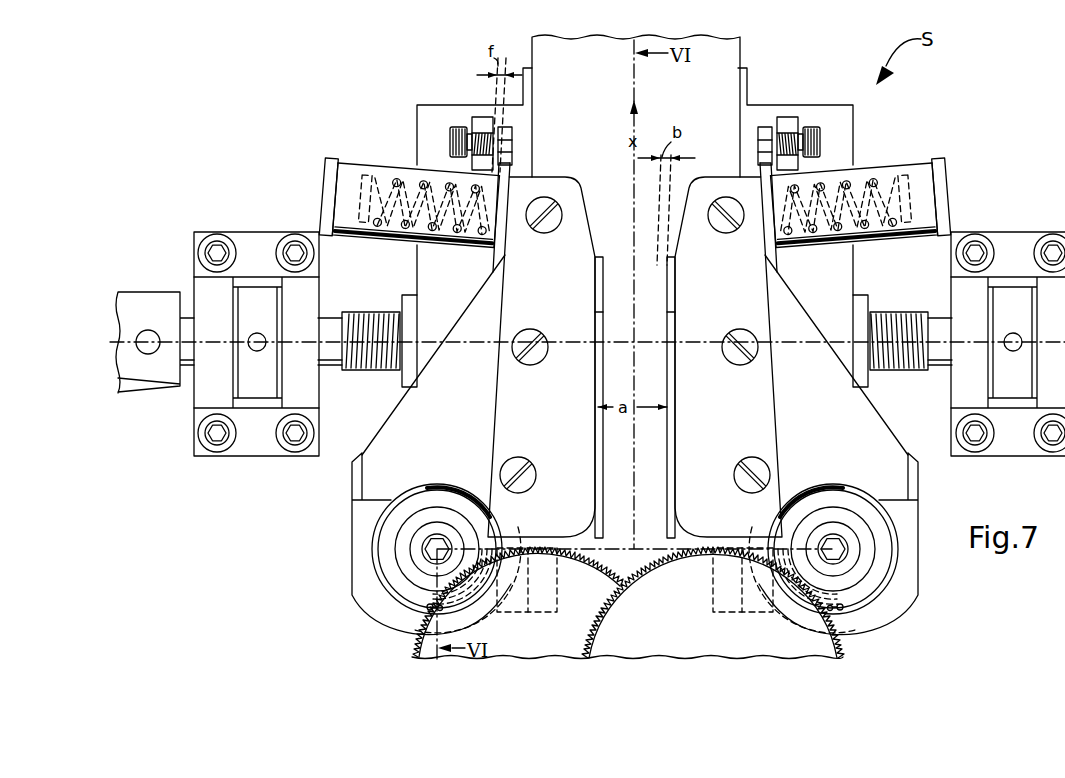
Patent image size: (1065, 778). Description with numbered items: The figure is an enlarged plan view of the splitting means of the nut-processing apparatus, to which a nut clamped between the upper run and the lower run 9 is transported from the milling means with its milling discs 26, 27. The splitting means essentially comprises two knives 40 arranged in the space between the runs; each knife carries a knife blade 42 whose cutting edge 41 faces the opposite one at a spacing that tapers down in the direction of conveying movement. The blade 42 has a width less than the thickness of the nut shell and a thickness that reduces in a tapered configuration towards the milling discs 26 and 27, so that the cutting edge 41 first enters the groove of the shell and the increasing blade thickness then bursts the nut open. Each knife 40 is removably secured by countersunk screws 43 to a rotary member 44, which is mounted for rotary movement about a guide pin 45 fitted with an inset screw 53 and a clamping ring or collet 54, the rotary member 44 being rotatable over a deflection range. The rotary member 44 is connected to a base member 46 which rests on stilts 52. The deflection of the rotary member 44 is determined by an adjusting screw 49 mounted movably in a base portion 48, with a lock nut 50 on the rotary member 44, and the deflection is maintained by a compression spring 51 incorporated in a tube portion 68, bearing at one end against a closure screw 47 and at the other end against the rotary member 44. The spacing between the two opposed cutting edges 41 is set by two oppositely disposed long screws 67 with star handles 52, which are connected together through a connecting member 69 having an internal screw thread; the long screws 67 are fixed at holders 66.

The lower run 9 is at (716, 45).
The milling disc 26 is at (842, 641).
The milling disc 27 is at (413, 642).
The knife 40 is at (522, 279).
The cutting edge 41 is at (604, 328).
The knife blade 42 is at (600, 278).
The countersunk screw 43 is at (555, 224).
The rotary member 44 is at (372, 428).
The guide pin 45 is at (410, 572).
The base member 46 is at (430, 256).
The closure screw 47 is at (328, 182).
The base portion 48 is at (482, 122).
The adjusting screw 49 is at (455, 136).
The lock nut 50 is at (509, 148).
The compression spring 51 is at (503, 190).
The star handle 52 is at (143, 300).
The inset screw 53 is at (425, 549).
The clamping ring 54 is at (377, 531).
The holder 66 is at (248, 447).
The long screw 67 is at (370, 356).
The tube portion 68 is at (356, 165).
The connecting member 69 is at (410, 302).